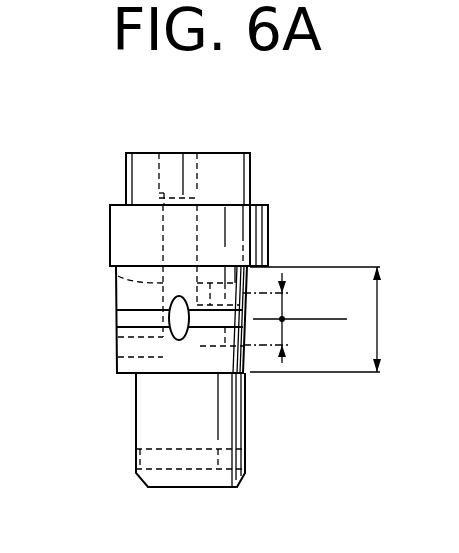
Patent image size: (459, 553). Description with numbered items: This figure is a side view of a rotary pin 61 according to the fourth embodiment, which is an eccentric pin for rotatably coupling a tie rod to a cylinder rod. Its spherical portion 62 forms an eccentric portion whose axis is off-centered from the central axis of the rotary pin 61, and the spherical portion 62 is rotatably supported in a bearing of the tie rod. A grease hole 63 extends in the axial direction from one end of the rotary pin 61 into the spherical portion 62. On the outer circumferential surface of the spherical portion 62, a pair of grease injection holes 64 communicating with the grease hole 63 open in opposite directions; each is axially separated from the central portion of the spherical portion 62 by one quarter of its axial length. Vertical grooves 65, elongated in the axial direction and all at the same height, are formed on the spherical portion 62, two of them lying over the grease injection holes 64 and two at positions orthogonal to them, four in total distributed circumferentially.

The rotary pin 61 is at (246, 142).
The spherical portion 62 is at (114, 292).
The grease hole 63 is at (116, 275).
The grease injection holes 64 is at (116, 343).
The vertical grooves 65 is at (177, 339).